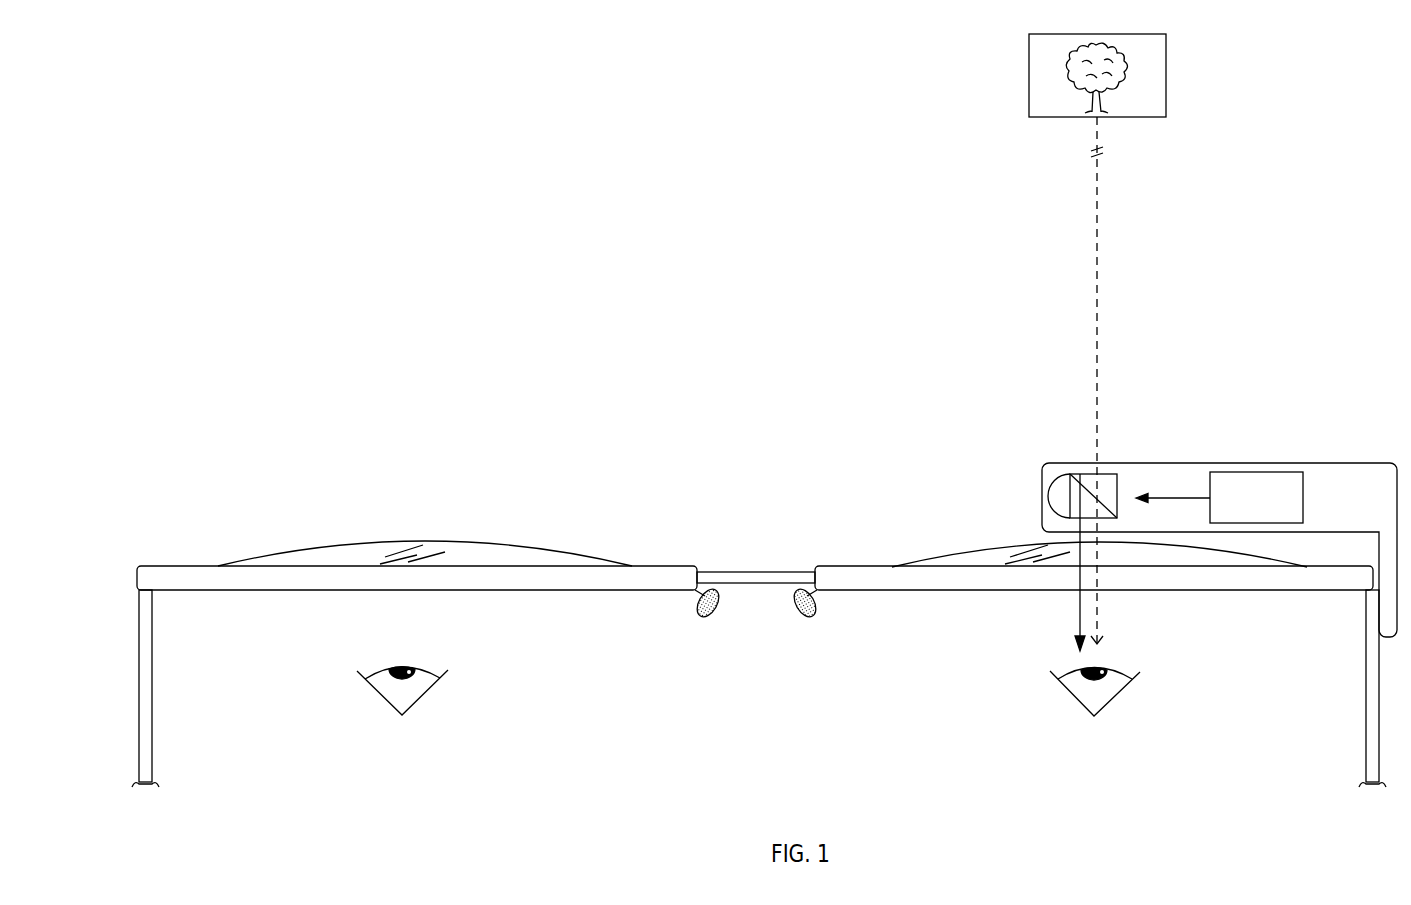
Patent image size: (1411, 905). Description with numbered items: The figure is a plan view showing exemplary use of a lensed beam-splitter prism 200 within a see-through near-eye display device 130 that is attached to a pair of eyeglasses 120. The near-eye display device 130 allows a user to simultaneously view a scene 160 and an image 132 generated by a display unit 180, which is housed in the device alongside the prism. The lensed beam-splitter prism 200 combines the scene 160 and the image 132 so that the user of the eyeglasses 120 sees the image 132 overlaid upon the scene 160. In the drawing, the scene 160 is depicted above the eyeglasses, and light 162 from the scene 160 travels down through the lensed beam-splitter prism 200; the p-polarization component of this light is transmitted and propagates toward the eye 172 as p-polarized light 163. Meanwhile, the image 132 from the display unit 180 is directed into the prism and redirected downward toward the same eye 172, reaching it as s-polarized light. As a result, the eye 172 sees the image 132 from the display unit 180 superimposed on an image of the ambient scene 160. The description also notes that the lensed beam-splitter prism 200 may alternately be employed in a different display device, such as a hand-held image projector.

The eyeglasses 120 is at (139, 637).
The see-through near-eye display device 130 is at (1363, 509).
The image 132 is at (1198, 498).
The scene 160 is at (1153, 117).
The light 162 is at (1099, 377).
The p-polarized light 163 is at (1098, 613).
The eye 172 is at (1073, 689).
The display unit 180 is at (1274, 509).
The lensed beam-splitter prism 200 is at (1070, 474).